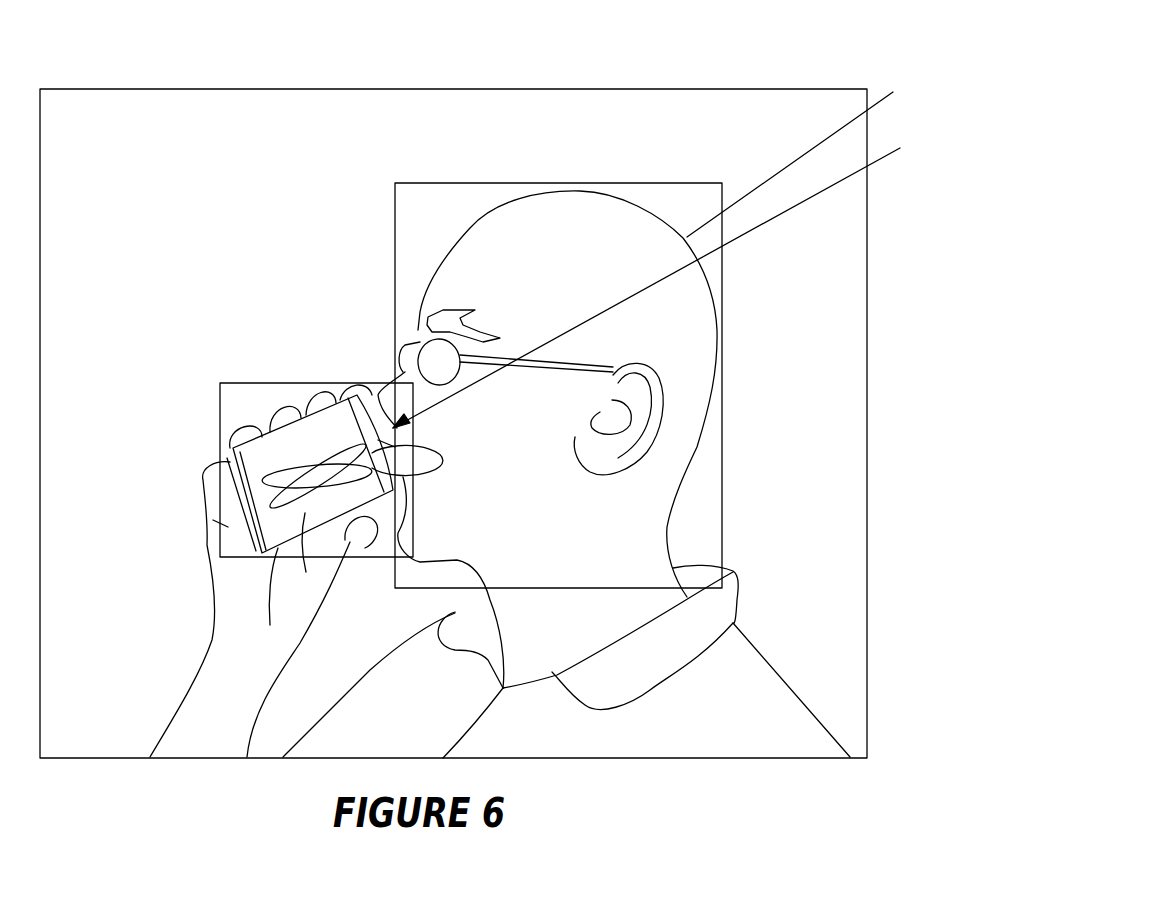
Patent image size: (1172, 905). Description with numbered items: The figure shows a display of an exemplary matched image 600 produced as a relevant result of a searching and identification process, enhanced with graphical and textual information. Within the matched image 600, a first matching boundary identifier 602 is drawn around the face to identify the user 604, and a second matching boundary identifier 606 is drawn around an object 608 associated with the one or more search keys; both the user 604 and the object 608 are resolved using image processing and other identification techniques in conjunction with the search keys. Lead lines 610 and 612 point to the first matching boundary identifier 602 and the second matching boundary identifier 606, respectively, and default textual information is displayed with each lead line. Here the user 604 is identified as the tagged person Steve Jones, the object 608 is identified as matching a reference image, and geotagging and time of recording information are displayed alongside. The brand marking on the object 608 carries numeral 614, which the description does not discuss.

The matched image 600 is at (748, 89).
The first matching boundary identifier 602 is at (548, 183).
The user 604 is at (620, 217).
The second matching boundary identifier 606 is at (323, 383).
The object 608 is at (310, 425).
The lead line 610 is at (880, 92).
The lead line 612 is at (843, 178).
The brand logo 614 is at (382, 442).